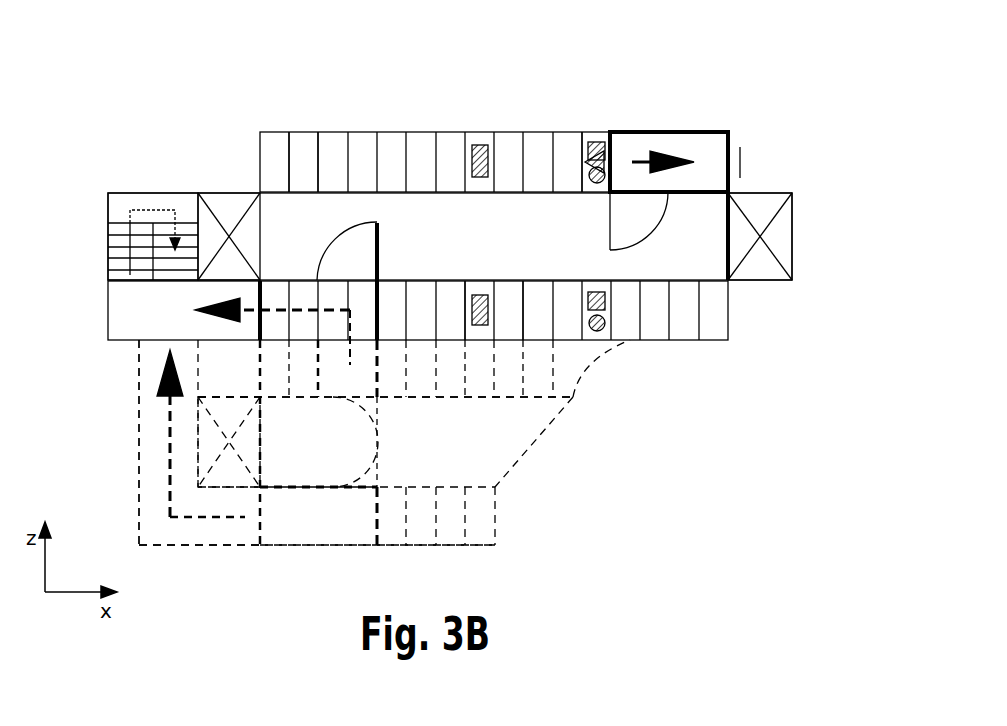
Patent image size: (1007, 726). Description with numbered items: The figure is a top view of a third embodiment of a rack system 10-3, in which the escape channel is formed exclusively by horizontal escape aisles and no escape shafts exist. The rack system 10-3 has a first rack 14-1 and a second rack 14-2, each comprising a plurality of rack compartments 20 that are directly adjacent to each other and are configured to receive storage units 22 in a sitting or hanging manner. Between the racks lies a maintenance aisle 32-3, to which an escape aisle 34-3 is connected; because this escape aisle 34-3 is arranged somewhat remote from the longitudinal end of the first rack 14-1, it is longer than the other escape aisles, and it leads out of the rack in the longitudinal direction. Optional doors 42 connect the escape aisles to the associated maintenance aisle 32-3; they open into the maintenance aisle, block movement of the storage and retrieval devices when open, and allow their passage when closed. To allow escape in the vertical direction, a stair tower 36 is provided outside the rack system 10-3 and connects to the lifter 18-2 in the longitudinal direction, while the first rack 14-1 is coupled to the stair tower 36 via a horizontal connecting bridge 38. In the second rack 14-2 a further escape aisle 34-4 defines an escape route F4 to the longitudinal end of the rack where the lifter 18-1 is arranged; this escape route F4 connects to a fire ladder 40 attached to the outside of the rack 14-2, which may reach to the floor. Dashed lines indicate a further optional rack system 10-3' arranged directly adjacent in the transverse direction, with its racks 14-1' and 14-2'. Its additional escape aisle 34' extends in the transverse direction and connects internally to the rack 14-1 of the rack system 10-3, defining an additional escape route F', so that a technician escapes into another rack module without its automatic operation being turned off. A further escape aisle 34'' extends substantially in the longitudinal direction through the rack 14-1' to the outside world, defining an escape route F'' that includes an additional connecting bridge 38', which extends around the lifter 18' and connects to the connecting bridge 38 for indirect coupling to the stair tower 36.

The rack system 10-3 is at (509, 184).
The further rack system 10-3' is at (455, 442).
The first rack 14-1 is at (564, 310).
The rack of the further rack system 14-1' is at (416, 471).
The second rack 14-2 is at (435, 154).
The rack of the further rack system 14-2' is at (456, 368).
The lifter 18-1 is at (795, 232).
The lifter 18-2 is at (218, 193).
The lifter of the further rack system 18' is at (229, 503).
The rack compartment 20 is at (274, 130).
The storage unit 22 is at (480, 140).
The maintenance aisle 32-3 is at (718, 250).
The escape aisle 34-3 is at (304, 290).
The further escape aisle 34-4 is at (706, 148).
The additional escape aisle 34' is at (355, 413).
The additional escape aisle 34'' is at (377, 516).
The stair tower 36 is at (100, 212).
The connecting bridge 38 is at (184, 310).
The additional connecting bridge 38' is at (199, 474).
The ladder 40 is at (740, 160).
The door 42 is at (378, 252).
The escape route F4 is at (636, 158).
The additional escape route F' is at (306, 331).
The additional escape route F'' is at (132, 433).